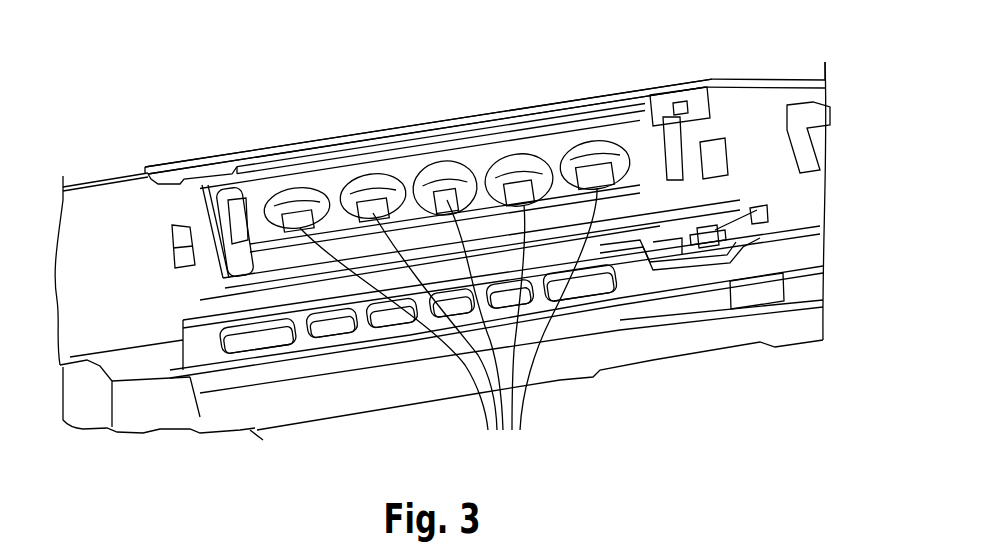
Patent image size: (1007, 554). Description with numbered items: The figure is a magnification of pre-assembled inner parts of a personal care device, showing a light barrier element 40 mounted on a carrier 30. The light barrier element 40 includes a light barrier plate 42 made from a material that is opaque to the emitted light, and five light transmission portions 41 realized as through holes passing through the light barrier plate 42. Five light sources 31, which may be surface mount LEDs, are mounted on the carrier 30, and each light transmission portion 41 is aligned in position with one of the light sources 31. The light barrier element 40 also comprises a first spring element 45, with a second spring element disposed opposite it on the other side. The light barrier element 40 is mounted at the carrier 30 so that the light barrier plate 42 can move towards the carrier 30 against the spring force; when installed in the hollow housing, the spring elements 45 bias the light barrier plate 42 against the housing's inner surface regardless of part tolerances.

The carrier 30 is at (755, 135).
The light sources 31 is at (418, 325).
The light barrier element 40 is at (273, 194).
The light transmission portions 41 is at (511, 157).
The light barrier plate 42 is at (578, 150).
The first spring element 45 is at (610, 230).